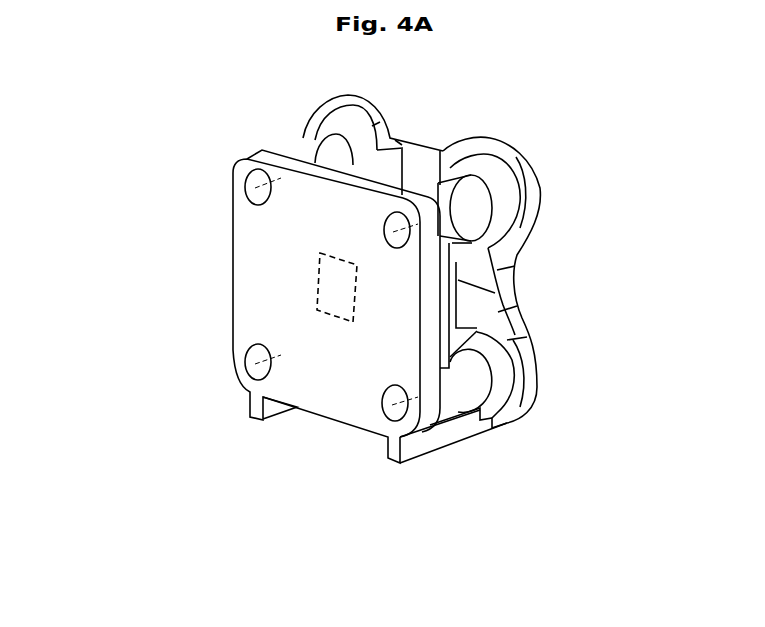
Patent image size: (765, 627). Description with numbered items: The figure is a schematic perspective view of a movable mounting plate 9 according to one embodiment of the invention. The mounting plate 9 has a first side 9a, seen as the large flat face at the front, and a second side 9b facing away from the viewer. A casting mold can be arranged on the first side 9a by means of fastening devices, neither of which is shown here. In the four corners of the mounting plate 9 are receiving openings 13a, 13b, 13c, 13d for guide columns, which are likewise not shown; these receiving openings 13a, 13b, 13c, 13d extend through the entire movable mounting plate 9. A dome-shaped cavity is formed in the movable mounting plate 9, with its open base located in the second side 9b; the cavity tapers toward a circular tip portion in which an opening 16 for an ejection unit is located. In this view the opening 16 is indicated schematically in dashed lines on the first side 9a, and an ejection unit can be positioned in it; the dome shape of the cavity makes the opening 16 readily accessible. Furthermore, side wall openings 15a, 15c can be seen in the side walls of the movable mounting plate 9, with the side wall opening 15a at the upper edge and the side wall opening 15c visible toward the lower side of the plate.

The movable mounting plate 9 is at (184, 173).
The first side 9a is at (270, 257).
The second side 9b is at (503, 290).
The receiving opening 13a is at (397, 232).
The receiving opening 13b is at (257, 198).
The receiving opening 13c is at (257, 363).
The receiving opening 13d is at (400, 413).
The side wall opening 15a is at (378, 175).
The side wall opening 15c is at (467, 310).
The opening for an ejection unit 16 is at (327, 302).